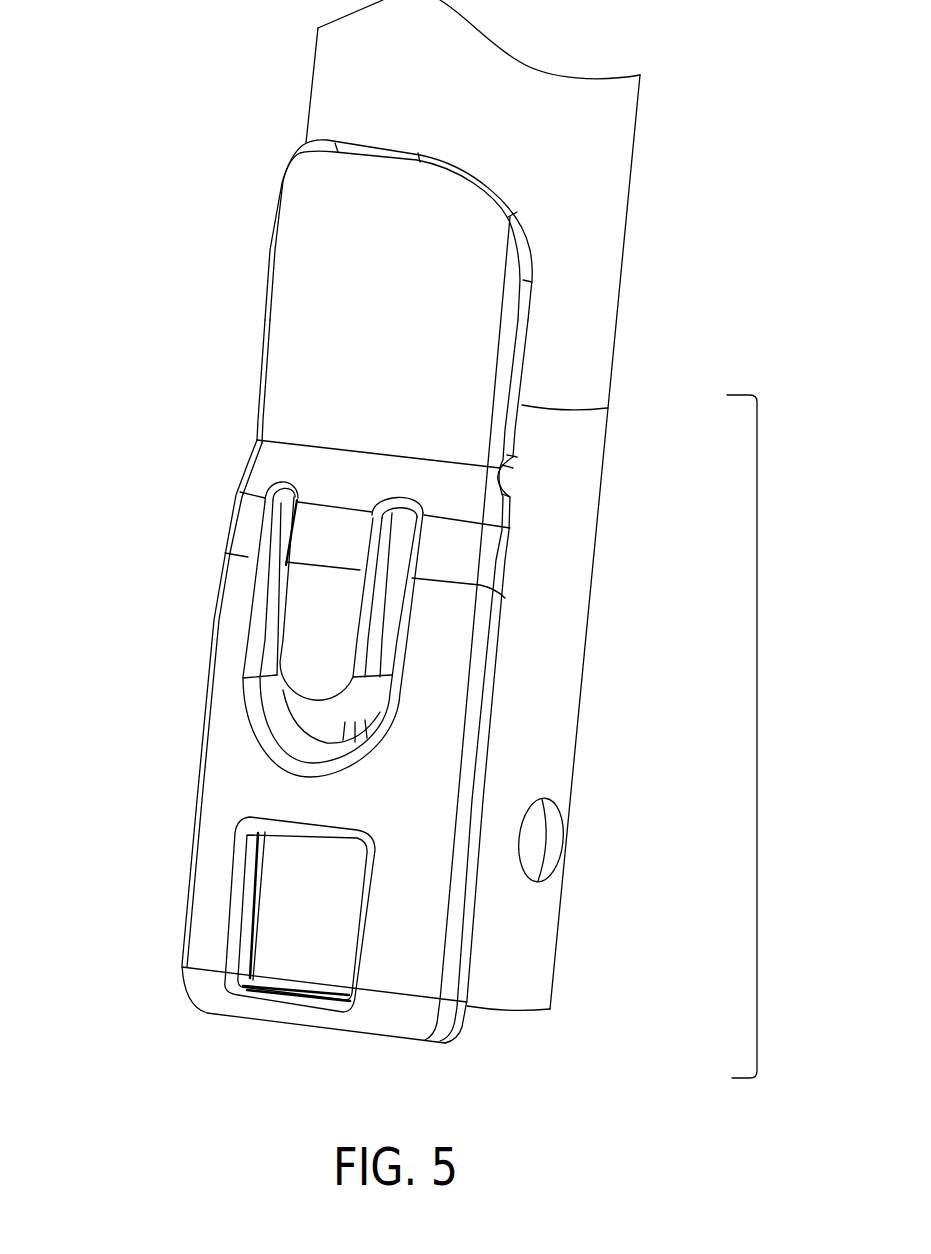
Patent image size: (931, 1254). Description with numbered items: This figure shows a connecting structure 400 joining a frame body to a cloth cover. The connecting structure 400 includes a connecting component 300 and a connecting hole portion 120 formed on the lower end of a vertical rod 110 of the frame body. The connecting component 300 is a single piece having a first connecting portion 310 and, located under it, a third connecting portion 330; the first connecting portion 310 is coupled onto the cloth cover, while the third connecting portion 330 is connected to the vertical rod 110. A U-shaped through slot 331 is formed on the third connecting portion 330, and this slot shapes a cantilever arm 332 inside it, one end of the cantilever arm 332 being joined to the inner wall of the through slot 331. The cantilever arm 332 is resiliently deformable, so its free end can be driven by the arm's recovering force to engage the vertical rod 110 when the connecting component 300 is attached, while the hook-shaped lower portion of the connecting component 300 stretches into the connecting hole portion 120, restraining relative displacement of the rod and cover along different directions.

The vertical rod 110 is at (572, 358).
The connecting hole portion 120 is at (520, 1020).
The connecting component 300 is at (394, 591).
The first connecting portion 310 is at (330, 366).
The third connecting portion 330 is at (233, 752).
The through slot 331 is at (270, 546).
The cantilever arm 332 is at (298, 673).
The connecting structure 400 is at (757, 715).